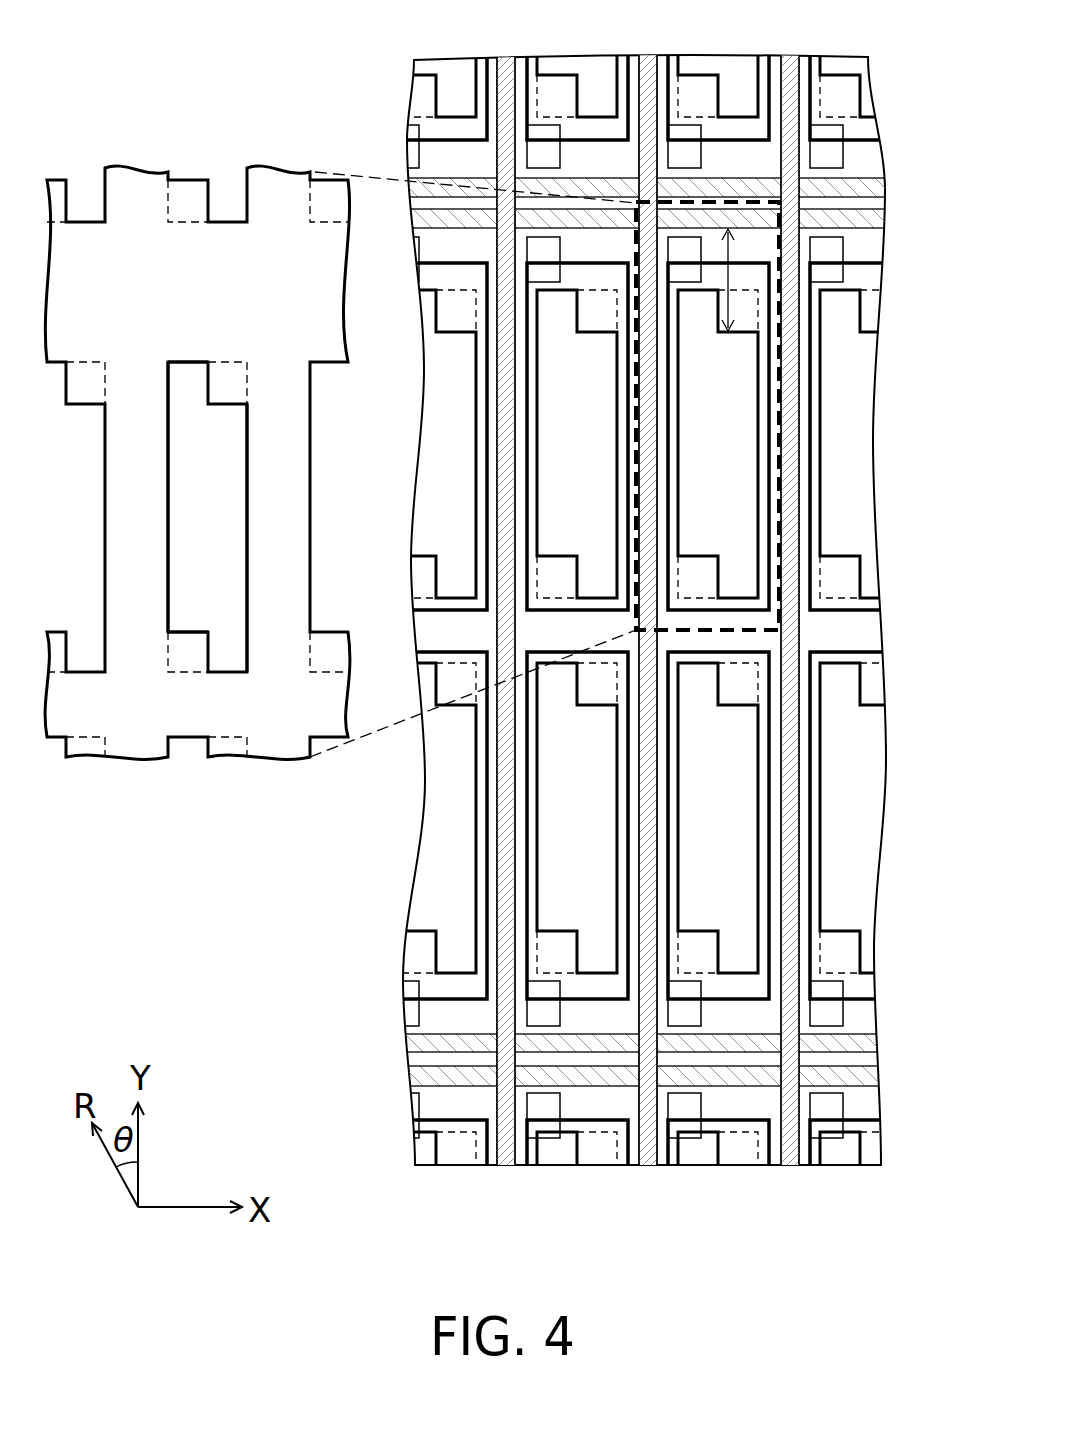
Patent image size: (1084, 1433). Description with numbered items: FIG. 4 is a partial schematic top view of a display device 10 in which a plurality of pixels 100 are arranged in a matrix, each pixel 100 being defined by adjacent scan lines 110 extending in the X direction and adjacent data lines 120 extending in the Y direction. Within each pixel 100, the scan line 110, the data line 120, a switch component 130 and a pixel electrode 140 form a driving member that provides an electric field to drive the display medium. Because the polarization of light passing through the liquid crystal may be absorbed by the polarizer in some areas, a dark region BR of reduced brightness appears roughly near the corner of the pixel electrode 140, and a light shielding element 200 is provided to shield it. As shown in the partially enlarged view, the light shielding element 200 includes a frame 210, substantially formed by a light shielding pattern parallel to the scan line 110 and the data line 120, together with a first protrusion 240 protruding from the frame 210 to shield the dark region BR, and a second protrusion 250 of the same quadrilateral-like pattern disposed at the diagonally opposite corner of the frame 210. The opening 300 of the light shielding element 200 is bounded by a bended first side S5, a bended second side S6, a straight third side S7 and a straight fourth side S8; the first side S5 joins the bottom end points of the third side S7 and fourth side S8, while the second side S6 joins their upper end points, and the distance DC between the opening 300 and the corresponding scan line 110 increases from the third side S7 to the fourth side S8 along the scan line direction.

The display device 10 is at (926, 1243).
The pixel 100 is at (779, 457).
The scan line 110 is at (855, 222).
The data line 120 is at (649, 88).
The switch component 130 is at (683, 283).
The pixel electrode 140 is at (730, 612).
The light shielding element 200 is at (212, 502).
The frame 210 is at (300, 455).
The first protrusion 240 is at (192, 655).
The second protrusion 250 is at (225, 381).
The opening 300 is at (562, 477).
The dark region BR is at (745, 310).
The distance DC is at (747, 277).
The first side S5 is at (190, 632).
The second side S6 is at (188, 364).
The third side S7 is at (168, 493).
The fourth side S8 is at (245, 549).